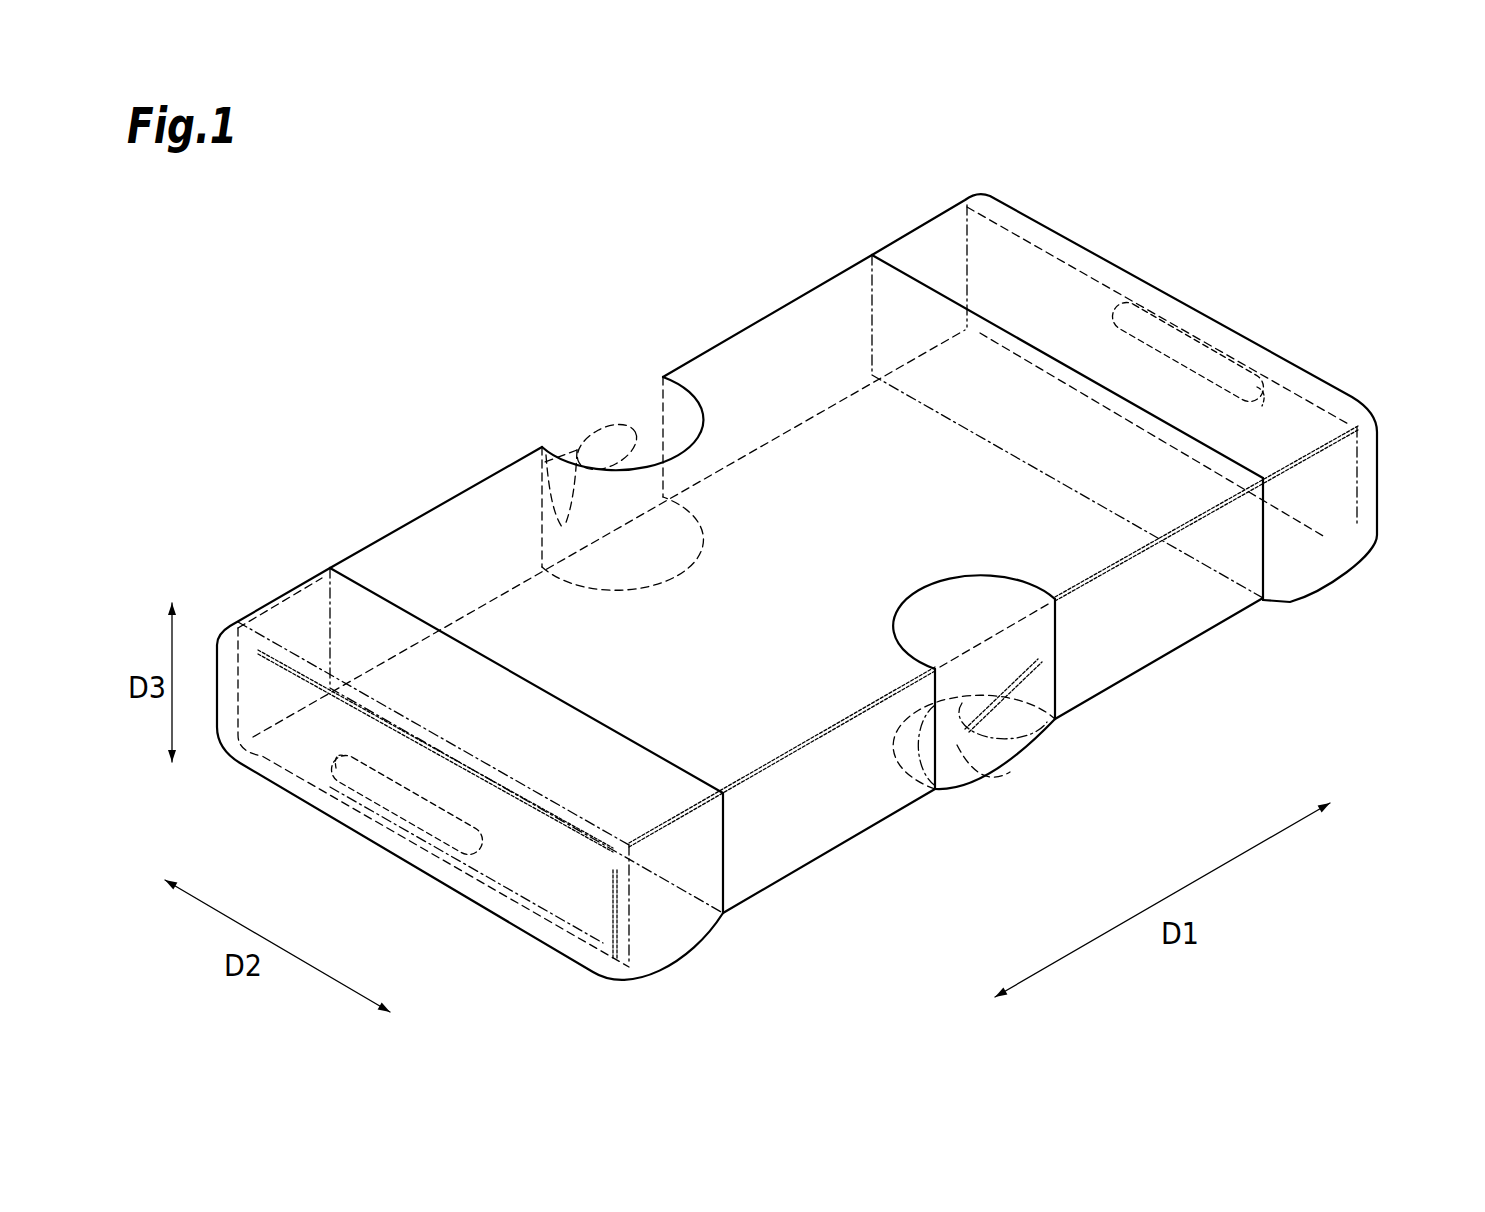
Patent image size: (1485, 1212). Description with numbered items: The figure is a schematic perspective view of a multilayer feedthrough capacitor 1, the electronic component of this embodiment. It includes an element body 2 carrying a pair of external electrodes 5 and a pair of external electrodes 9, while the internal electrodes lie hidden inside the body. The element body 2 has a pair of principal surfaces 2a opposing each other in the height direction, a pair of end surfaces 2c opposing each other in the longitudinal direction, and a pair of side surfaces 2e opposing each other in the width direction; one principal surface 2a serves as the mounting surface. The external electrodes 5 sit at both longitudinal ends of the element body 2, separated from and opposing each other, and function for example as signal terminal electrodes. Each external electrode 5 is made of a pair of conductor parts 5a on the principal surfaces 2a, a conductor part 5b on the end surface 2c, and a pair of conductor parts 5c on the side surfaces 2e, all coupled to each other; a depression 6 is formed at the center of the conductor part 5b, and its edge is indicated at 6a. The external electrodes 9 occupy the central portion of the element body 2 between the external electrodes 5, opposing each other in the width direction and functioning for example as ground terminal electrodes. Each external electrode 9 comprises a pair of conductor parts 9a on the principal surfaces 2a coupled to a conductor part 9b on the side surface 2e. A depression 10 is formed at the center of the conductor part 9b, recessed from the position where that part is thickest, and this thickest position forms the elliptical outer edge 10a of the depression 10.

The multilayer feedthrough capacitor 1 is at (466, 300).
The element body 2 is at (757, 317).
The principal surfaces 2a is at (465, 550).
The end surfaces 2c is at (1325, 410).
The side surfaces 2e is at (833, 328).
The external electrodes 5 is at (980, 190).
The conductor parts 5a is at (1090, 300).
The conductor part 5b is at (1035, 270).
The conductor parts 5c is at (930, 265).
The depression 6 is at (1200, 345).
The edge of window 6a is at (1270, 385).
The external electrodes 9 is at (705, 400).
The conductor parts 9a is at (670, 423).
The conductor part 9b is at (517, 460).
The depression 10 is at (567, 427).
The outer edge 10a is at (630, 403).